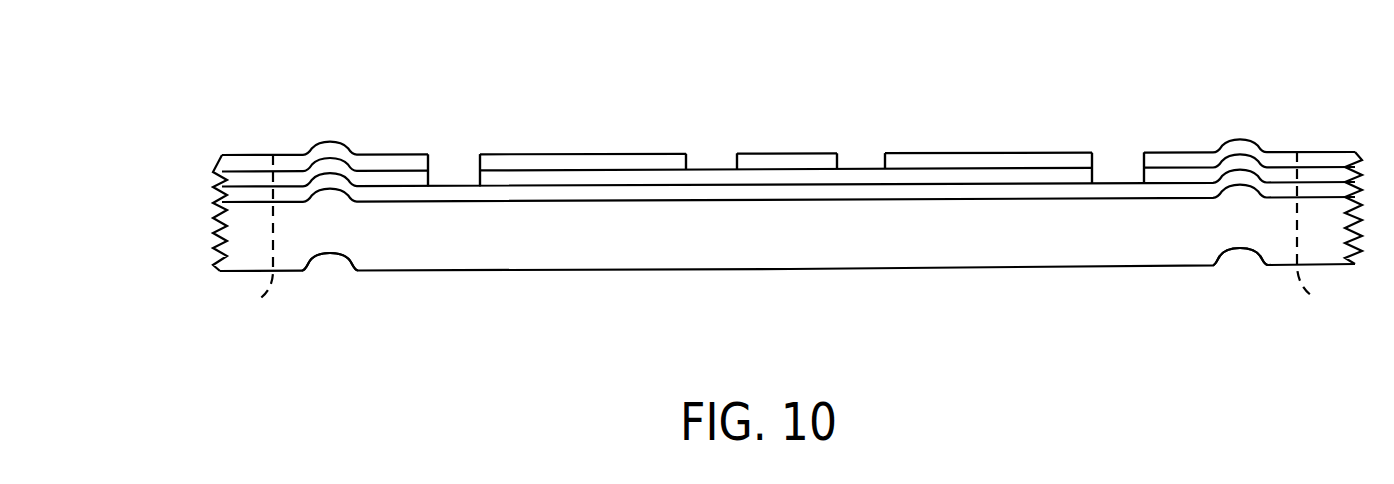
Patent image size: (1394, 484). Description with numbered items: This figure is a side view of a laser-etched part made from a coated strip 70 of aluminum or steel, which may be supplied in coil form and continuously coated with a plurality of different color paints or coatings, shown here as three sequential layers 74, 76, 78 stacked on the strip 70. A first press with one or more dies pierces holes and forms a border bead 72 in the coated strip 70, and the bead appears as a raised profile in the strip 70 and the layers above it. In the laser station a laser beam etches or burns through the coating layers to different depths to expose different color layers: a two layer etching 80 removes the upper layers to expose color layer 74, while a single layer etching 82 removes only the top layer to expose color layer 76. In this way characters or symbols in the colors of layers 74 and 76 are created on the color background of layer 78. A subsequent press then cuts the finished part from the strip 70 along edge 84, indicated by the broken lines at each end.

The substrate 70 is at (772, 248).
The raised bumps in substrate 72 is at (332, 254).
The first layer 74 is at (218, 196).
The second layer 76 is at (213, 184).
The third layer 78 is at (220, 162).
The openings through second and third layers 80 is at (455, 128).
The openings through third layer 82 is at (705, 128).
The break lines 84 is at (258, 300).